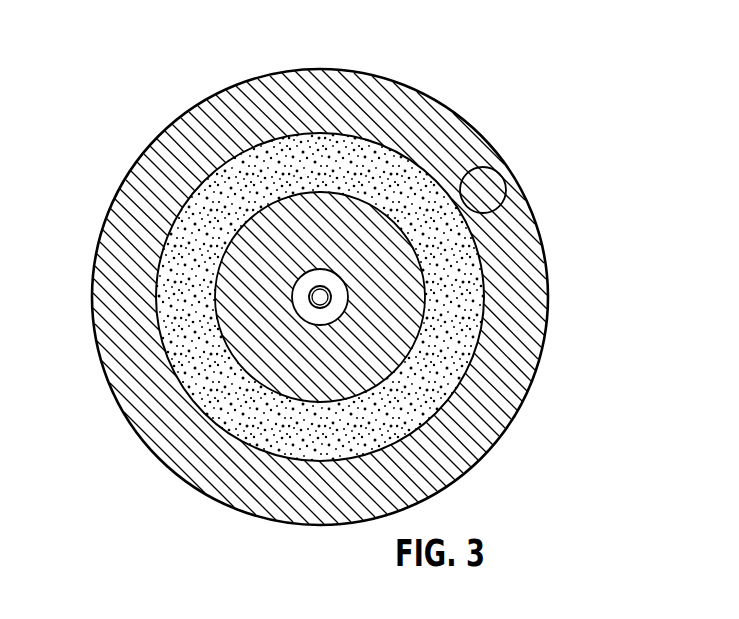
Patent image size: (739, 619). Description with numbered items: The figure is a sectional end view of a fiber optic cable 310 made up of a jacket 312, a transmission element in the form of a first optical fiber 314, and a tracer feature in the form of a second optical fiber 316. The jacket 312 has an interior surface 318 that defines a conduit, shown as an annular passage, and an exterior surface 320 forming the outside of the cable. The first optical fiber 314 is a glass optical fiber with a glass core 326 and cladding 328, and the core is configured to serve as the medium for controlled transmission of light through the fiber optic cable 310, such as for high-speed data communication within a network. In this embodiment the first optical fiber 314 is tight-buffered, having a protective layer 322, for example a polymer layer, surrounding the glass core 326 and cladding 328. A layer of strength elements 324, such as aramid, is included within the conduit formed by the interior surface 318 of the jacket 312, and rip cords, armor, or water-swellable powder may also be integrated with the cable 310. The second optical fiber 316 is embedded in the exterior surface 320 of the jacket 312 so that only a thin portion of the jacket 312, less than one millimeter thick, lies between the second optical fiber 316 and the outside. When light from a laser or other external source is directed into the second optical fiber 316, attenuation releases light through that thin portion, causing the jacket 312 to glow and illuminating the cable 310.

The fiber optic cable 310 is at (106, 119).
The jacket 312 is at (520, 260).
The first optical fiber 314 is at (318, 284).
The second optical fiber 316 is at (482, 192).
The interior surface 318 is at (188, 386).
The exterior surface 320 is at (208, 504).
The protective layer 322 is at (227, 257).
The strength elements 324 is at (310, 430).
The glass core 326 is at (290, 300).
The cladding 328 is at (309, 294).